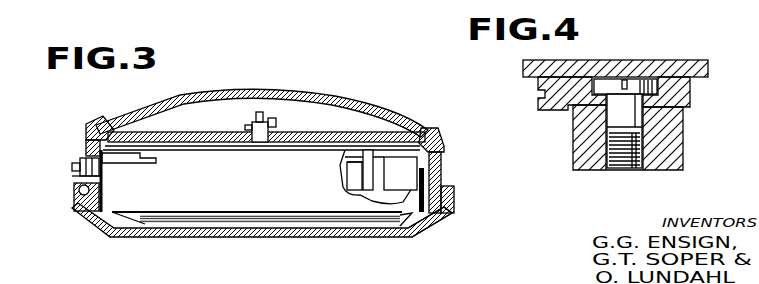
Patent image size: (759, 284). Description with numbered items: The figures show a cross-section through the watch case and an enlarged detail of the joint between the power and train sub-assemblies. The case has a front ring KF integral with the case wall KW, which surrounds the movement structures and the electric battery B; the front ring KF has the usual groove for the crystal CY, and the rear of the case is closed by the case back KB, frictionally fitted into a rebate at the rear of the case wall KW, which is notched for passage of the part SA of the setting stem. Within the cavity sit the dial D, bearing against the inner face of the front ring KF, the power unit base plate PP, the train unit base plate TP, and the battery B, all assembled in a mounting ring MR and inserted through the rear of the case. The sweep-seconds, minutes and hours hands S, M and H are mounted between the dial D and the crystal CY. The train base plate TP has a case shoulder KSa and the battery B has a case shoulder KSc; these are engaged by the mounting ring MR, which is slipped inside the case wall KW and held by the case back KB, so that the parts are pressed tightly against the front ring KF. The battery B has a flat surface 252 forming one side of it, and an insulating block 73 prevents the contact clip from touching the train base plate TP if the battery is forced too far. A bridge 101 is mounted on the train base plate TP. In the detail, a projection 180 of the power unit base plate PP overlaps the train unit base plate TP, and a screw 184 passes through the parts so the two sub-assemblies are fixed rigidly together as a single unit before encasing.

In FIG. 3, the crystal CY is at (184, 91).
In FIG. 3, the dial D is at (318, 132).
In FIG. 4, the dial D is at (621, 62).
In FIG. 3, the electric battery B is at (256, 188).
In FIG. 3, the case back KB is at (75, 200).
In FIG. 3, the mounting ring MR is at (95, 217).
In FIG. 3, the front ring KF is at (88, 127).
In FIG. 3, the case wall KW is at (88, 148).
In FIG. 3, the part of the setting stem SA is at (74, 168).
In FIG. 3, the case shoulder KSc is at (140, 165).
In FIG. 3, the minutes hand M is at (250, 121).
In FIG. 3, the sweep-seconds hand S is at (258, 112).
In FIG. 3, the hours hand H is at (276, 125).
In FIG. 3, the flat surface 252 is at (345, 133).
In FIG. 3, the insulating block 73 is at (380, 187).
In FIG. 3, the train unit base plate TP is at (400, 173).
In FIG. 4, the train unit base plate TP is at (573, 160).
In FIG. 3, the case shoulder KSa is at (444, 150).
In FIG. 3, the bridge 101 is at (446, 190).
In FIG. 4, the power unit base plate PP is at (553, 106).
In FIG. 4, the projection 180 is at (692, 98).
In FIG. 4, the screw 184 is at (618, 164).